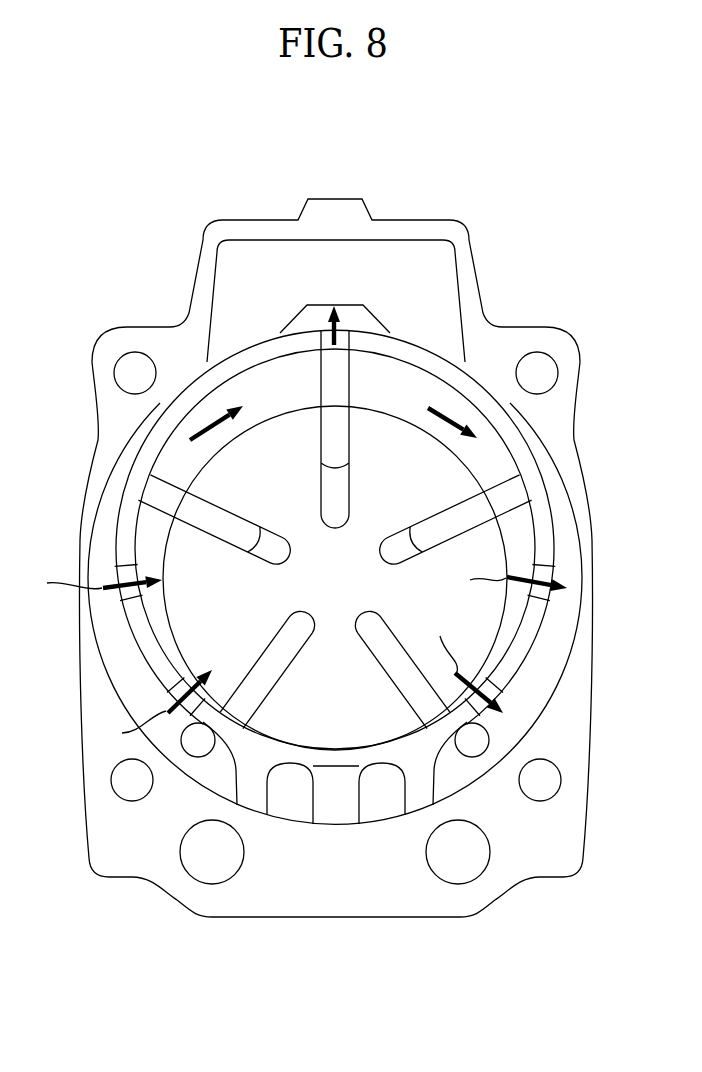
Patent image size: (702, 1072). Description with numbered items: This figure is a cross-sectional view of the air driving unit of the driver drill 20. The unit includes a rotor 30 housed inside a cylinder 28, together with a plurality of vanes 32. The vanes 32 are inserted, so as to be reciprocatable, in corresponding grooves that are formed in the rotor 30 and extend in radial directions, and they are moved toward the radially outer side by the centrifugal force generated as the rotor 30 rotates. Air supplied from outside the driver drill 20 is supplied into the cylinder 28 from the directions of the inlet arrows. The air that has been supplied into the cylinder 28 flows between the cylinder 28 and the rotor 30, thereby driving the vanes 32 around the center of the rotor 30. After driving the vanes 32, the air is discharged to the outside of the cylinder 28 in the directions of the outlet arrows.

The driver drill 20 is at (185, 206).
The cylinder 28 is at (420, 347).
The rotor 30 is at (373, 427).
The vanes 32 is at (322, 385).